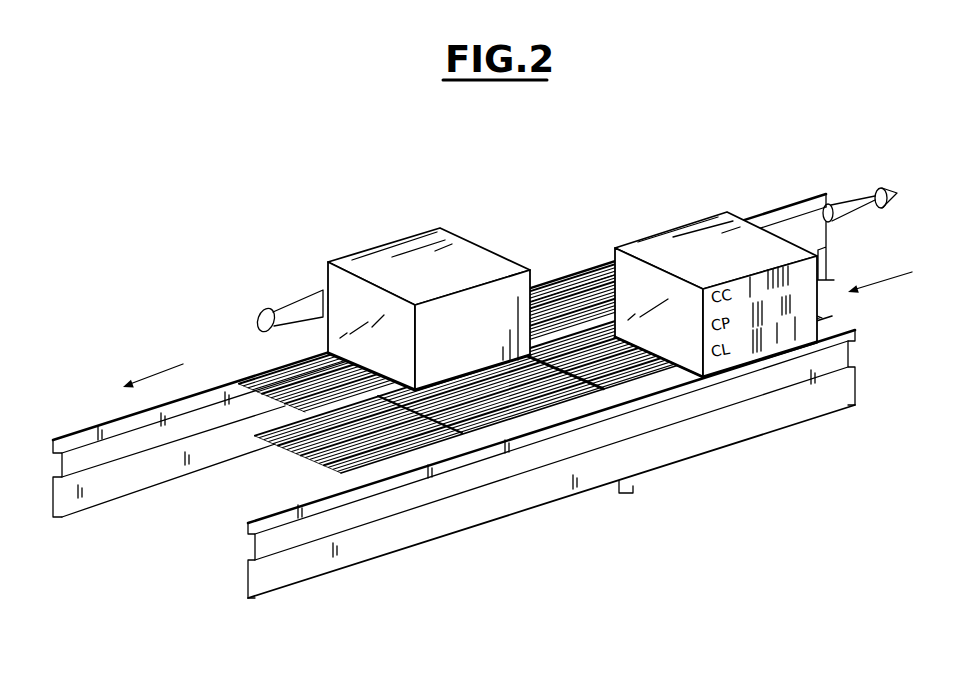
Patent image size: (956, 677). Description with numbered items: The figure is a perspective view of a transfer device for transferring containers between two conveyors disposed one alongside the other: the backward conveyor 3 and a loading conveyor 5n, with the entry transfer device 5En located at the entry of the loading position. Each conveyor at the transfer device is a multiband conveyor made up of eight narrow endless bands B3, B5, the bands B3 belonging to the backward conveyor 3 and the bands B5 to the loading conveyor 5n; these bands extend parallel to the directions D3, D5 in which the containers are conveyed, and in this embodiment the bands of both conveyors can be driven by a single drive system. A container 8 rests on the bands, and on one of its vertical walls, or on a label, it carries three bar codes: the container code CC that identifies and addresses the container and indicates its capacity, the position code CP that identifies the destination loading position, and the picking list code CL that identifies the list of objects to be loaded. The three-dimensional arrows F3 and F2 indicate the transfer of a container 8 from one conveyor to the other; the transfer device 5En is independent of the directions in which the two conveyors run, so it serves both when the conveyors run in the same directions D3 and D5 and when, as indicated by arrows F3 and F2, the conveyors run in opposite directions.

The backward conveyor 3 is at (258, 583).
The loading conveyor 5n is at (77, 430).
The container 8 is at (403, 250).
The narrow endless bands B3 is at (343, 475).
The narrow endless bands B5 is at (241, 434).
The conveying direction of backward conveyor D3 is at (892, 282).
The conveying direction of loading conveyor D5 is at (158, 373).
The three-dimensional arrow F2 is at (868, 196).
The three-dimensional arrow F3 is at (296, 309).
The entry transfer device 5En is at (565, 228).